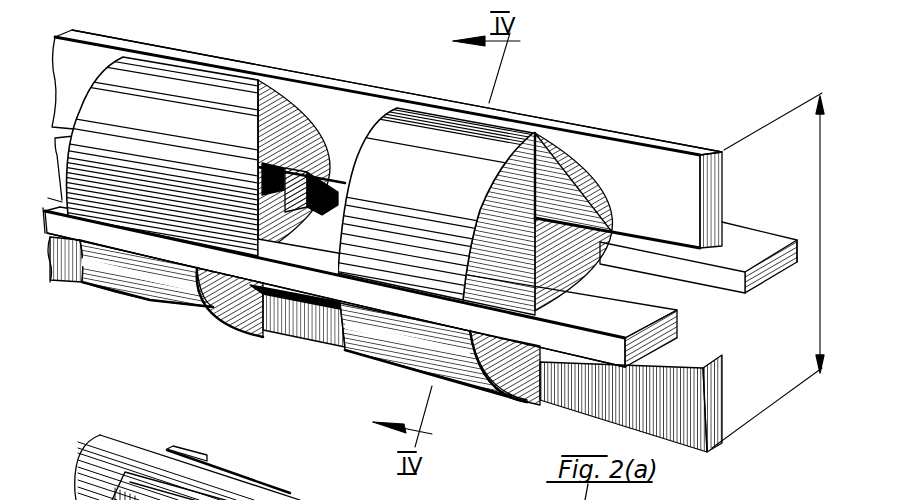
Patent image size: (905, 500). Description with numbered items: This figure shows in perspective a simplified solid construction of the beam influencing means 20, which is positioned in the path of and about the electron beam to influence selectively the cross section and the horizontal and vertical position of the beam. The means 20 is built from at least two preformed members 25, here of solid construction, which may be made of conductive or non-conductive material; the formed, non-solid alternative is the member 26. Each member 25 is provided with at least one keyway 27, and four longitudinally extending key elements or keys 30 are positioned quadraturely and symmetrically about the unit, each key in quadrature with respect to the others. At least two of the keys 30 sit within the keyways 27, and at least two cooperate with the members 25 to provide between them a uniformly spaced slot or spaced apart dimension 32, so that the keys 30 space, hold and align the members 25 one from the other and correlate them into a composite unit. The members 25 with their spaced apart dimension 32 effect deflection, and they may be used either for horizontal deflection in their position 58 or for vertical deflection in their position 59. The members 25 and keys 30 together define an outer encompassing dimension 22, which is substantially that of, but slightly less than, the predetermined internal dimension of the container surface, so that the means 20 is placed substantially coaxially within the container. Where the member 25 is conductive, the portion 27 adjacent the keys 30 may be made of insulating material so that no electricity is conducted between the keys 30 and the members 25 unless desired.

The horizontal deflection position 58 is at (234, 37).
The vertical deflection position 59 is at (476, 88).
The preformed member 25 is at (306, 172).
The keyway 27 is at (533, 163).
The spaced apart dimension 32 is at (220, 307).
The beam influencing means 20 is at (358, 397).
The key element 30 is at (727, 371).
The outer encompassing dimension 22 is at (820, 150).
The preformed member 26 is at (325, 499).